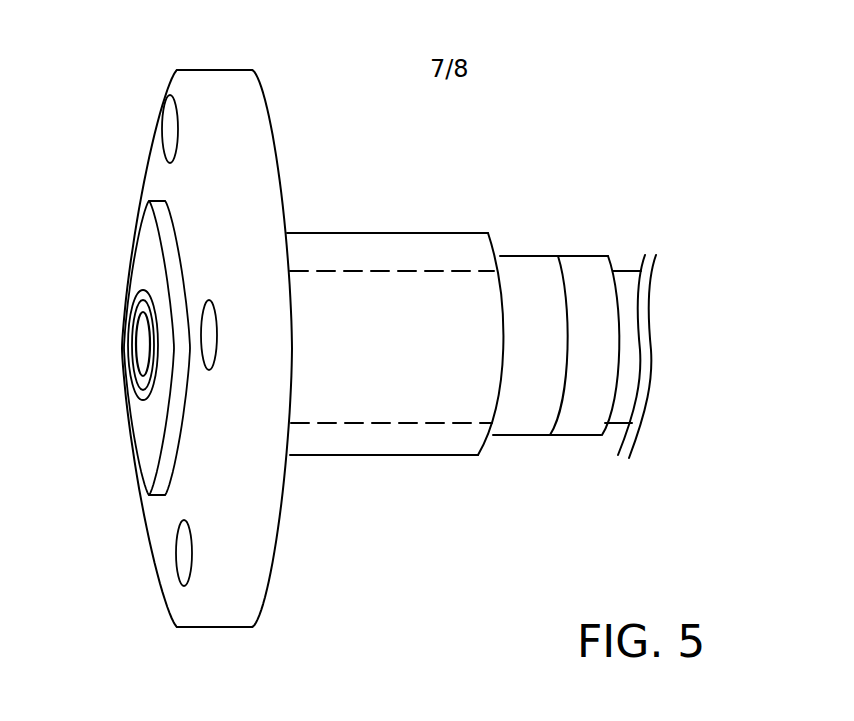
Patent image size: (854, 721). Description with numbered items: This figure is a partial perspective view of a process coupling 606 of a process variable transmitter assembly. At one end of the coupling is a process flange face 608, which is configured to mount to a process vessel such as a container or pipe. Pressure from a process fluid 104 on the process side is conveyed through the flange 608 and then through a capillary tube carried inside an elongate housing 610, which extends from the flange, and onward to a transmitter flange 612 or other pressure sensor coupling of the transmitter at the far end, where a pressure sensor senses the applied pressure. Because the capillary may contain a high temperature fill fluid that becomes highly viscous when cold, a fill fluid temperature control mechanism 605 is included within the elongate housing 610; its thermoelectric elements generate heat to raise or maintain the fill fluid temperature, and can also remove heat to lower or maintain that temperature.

The process fluid 104 is at (60, 346).
The fill fluid temperature control mechanism 605 is at (335, 423).
The process coupling 606 is at (540, 128).
The process flange face 608 is at (210, 70).
The elongate housing 610 is at (417, 455).
The transmitter flange 612 is at (783, 356).